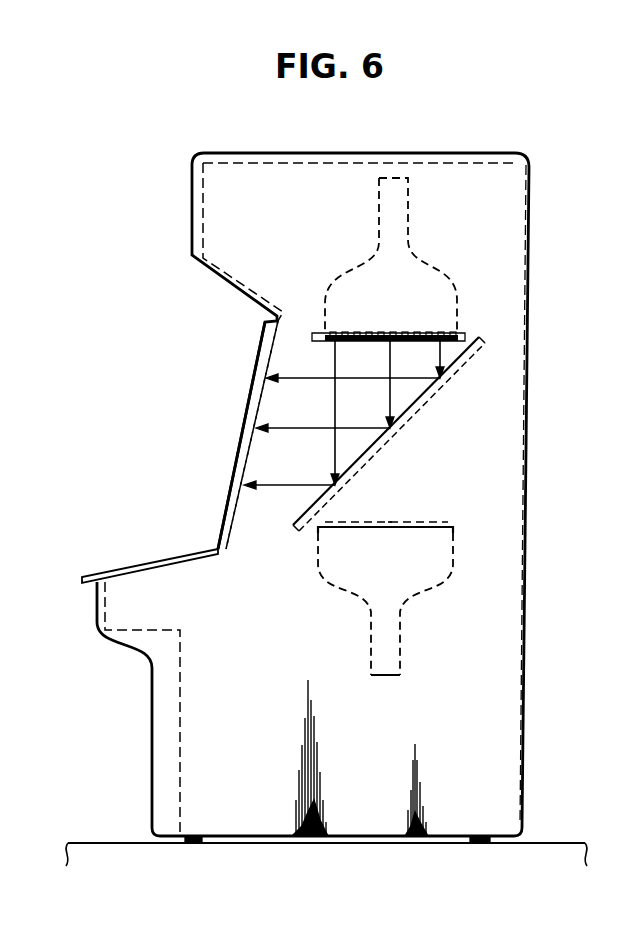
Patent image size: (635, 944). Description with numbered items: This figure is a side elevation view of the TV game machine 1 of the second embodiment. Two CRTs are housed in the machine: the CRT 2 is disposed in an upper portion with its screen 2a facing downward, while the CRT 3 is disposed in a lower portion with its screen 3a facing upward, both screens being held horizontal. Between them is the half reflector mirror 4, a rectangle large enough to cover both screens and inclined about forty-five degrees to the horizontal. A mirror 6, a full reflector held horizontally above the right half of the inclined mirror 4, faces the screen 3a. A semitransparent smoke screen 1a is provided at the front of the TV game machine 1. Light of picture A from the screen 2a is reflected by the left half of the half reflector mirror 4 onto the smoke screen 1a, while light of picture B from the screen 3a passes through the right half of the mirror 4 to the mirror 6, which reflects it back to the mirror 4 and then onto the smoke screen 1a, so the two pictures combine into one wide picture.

The TV game machine 1 is at (532, 220).
The smoke screen 1a is at (238, 452).
The CRT 2 is at (410, 244).
The screen 2a is at (337, 342).
The CRT 3 is at (360, 608).
The screen 3a is at (403, 522).
The half reflector mirror 4 is at (292, 518).
The mirror 6 is at (313, 333).